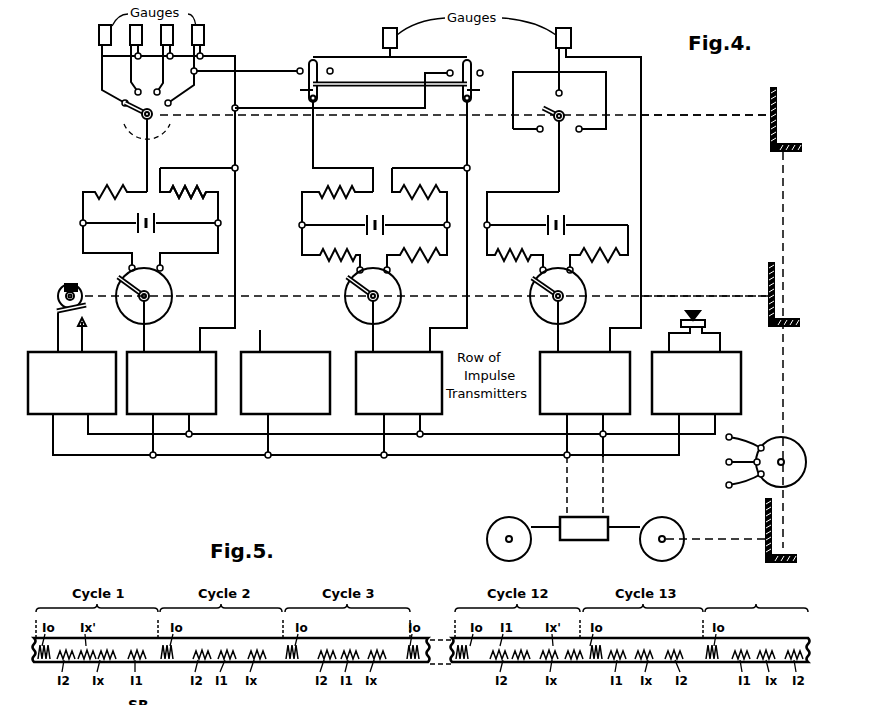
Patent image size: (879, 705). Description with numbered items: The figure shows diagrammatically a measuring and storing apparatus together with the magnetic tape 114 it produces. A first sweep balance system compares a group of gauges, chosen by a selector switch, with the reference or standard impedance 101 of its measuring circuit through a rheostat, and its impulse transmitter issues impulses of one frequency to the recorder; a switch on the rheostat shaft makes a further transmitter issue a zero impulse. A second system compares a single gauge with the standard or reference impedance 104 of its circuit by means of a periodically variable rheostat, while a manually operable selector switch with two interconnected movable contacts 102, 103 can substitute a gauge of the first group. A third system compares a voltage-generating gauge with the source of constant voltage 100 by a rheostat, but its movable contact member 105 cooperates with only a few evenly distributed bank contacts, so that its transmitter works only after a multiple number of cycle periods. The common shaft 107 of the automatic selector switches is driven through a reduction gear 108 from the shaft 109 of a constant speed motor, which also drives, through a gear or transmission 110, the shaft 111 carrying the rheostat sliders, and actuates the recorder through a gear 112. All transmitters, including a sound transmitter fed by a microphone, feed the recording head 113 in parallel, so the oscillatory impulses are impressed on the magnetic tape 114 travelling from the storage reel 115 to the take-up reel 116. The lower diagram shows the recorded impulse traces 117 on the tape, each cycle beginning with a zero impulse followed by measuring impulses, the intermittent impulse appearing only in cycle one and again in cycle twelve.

In FIG. 4, the source of constant voltage 100 is at (546, 221).
In FIG. 4, the reference or standard impedance 101 is at (203, 198).
In FIG. 4, the movable contact of selector switch Sx 102 is at (293, 93).
In FIG. 4, the movable contact of selector switch Sx 103 is at (486, 93).
In FIG. 4, the standard or reference impedance 104 is at (431, 198).
In FIG. 4, the movable contact member of selector switch Cx' 105 is at (559, 100).
In FIG. 4, the common shaft of the automatically operable selector switches 107 is at (676, 116).
In FIG. 4, the reduction gear 108 is at (767, 119).
In FIG. 4, the shaft of constant speed motor 109 is at (783, 372).
In FIG. 4, the gear or transmission 110 is at (772, 303).
In FIG. 4, the shaft of the rheostatic circuit control devices 111 is at (712, 298).
In FIG. 4, the gear 112 is at (764, 556).
In FIG. 4, the recording head 113 is at (608, 518).
In FIG. 4, the magnetic tape 114 is at (540, 527).
In FIG. 5, the magnetic tape 114 is at (281, 704).
In FIG. 4, the storage reel 115 is at (521, 552).
In FIG. 4, the take-up reel 116 is at (648, 552).
In FIG. 5, the recorded impulse traces 117 is at (237, 704).